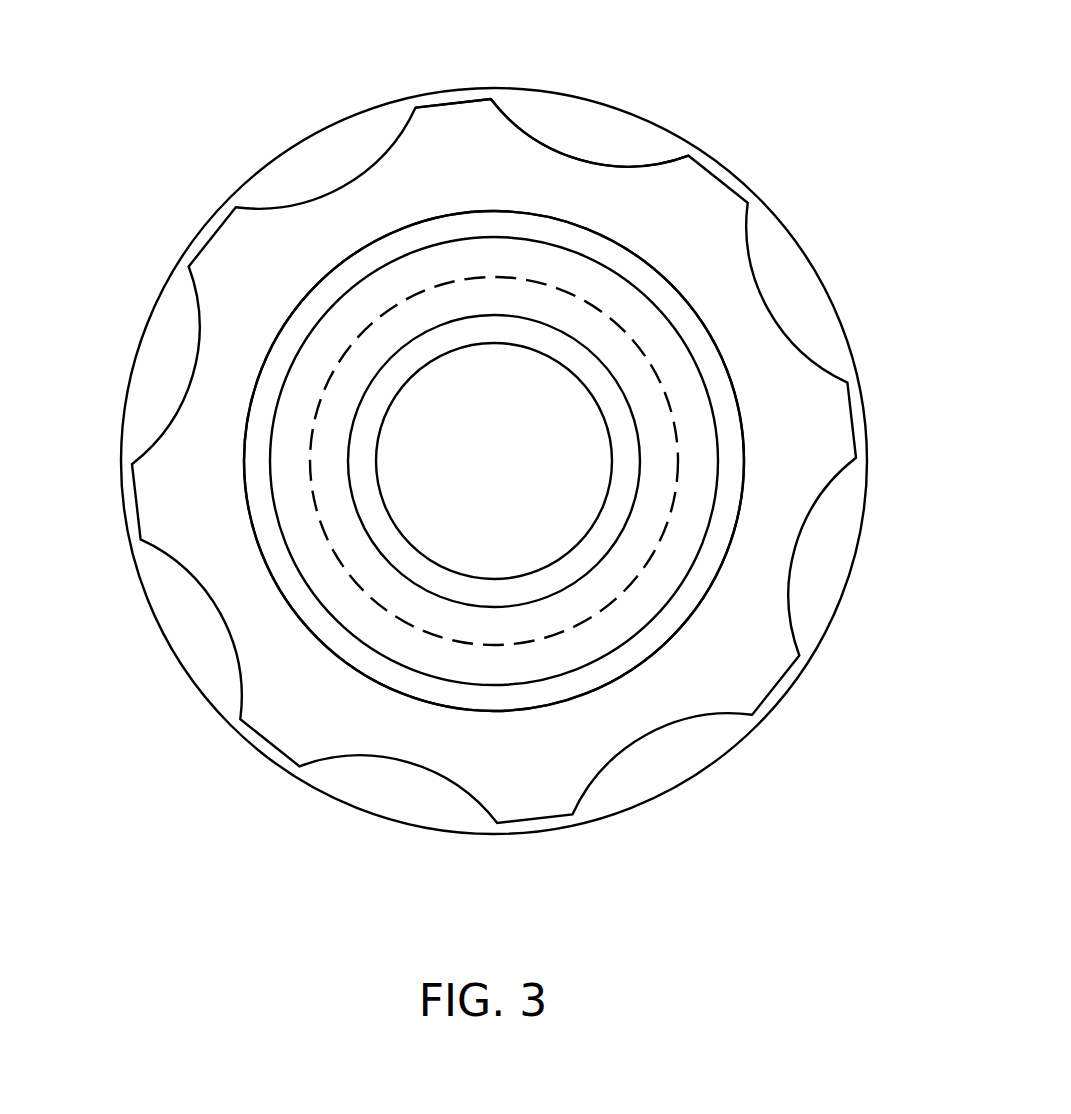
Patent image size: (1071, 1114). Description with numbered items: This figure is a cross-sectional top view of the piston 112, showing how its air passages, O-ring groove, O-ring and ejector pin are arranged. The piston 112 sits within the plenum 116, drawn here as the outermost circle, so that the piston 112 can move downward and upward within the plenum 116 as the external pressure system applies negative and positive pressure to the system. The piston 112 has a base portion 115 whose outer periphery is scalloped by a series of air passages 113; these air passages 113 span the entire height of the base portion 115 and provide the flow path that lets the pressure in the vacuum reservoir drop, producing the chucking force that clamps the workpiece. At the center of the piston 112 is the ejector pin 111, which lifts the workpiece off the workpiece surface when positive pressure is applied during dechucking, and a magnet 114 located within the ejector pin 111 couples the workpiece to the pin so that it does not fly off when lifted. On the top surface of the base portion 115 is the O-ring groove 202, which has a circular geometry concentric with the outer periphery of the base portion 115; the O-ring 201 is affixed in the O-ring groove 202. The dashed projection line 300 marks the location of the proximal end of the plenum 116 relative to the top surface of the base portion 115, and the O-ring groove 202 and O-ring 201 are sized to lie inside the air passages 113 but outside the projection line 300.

The ejector pin 111 is at (350, 418).
The piston 112 is at (418, 108).
The air passages 113 is at (588, 160).
The magnet 114 is at (393, 525).
The base portion 115 is at (478, 101).
The plenum 116 is at (282, 150).
The O-ring 201 is at (663, 293).
The O-ring groove 202 is at (745, 397).
The projection line 300 is at (658, 552).